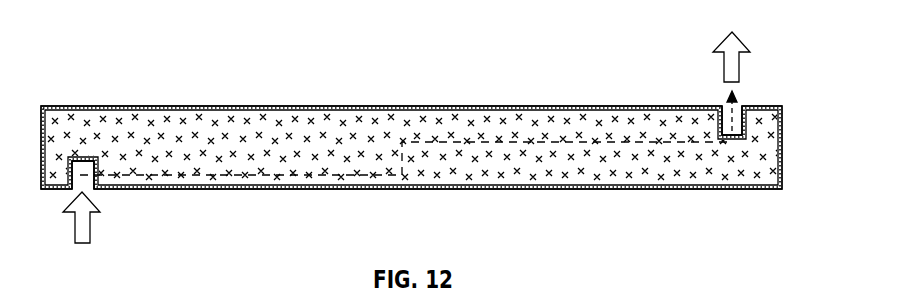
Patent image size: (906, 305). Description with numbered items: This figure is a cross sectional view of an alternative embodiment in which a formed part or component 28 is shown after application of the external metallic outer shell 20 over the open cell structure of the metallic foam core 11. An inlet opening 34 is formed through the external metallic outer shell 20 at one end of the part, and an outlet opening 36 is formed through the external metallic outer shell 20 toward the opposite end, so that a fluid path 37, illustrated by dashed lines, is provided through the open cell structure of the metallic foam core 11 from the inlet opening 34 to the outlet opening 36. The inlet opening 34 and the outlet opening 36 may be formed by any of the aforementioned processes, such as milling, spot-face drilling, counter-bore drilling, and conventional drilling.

The formed part or component 28 is at (593, 64).
The external metallic outer shell 20 is at (218, 106).
The metallic foam core 11 is at (478, 148).
The fluid path 37 is at (443, 139).
The inlet opening 34 is at (88, 197).
The outlet opening 36 is at (727, 106).